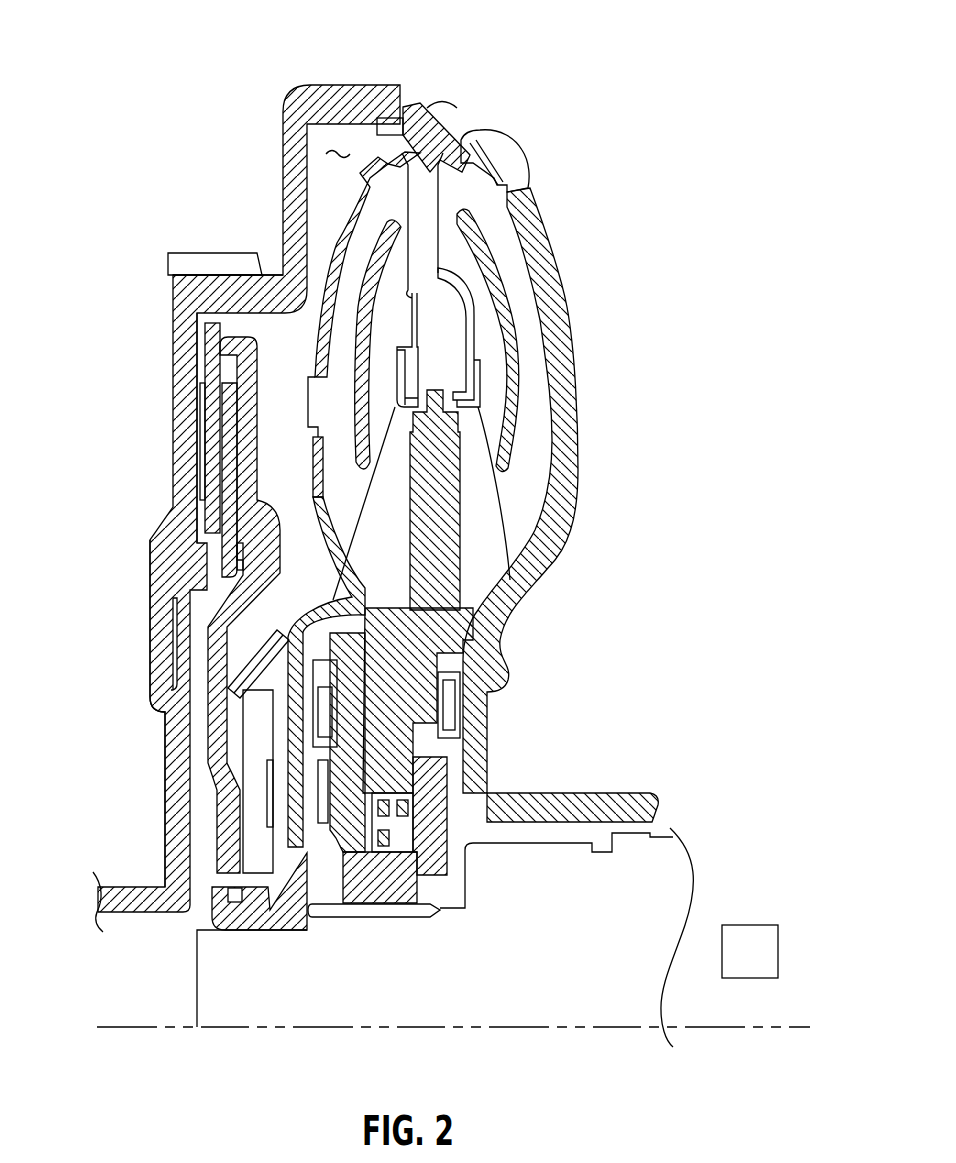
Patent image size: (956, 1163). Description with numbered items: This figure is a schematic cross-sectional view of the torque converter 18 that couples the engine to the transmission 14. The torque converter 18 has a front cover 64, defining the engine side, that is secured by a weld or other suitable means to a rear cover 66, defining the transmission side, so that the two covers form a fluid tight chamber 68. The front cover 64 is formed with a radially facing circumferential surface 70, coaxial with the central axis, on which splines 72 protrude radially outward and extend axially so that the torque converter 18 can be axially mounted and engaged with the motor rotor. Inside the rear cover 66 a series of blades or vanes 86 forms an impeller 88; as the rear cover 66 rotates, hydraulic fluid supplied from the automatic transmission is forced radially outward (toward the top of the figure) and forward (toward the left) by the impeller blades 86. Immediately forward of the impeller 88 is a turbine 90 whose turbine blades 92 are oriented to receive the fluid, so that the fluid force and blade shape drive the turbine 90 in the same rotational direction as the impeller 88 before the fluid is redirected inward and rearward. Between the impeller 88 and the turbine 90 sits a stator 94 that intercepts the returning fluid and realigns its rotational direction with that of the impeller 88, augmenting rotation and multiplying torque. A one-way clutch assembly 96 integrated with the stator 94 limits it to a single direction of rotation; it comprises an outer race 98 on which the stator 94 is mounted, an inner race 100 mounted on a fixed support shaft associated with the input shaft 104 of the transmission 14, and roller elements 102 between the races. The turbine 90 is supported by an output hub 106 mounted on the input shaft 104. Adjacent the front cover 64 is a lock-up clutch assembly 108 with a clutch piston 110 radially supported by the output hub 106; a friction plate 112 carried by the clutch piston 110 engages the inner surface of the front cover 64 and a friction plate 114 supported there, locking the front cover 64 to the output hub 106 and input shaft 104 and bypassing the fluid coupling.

The transmission 14 is at (673, 952).
The torque converter 18 is at (523, 60).
The front cover 64 is at (303, 107).
The rear cover 66 is at (500, 153).
The fluid tight chamber 68 is at (340, 150).
The circumferential surface 70 is at (278, 262).
The splines 72 is at (166, 252).
The impeller blades 86 is at (530, 302).
The impeller 88 is at (503, 236).
The turbine 90 is at (300, 338).
The turbine blades 92 is at (380, 203).
The stator 94 is at (447, 517).
The one-way clutch assembly 96 is at (448, 760).
The outer race 98 is at (400, 757).
The inner race 100 is at (440, 892).
The roller elements 102 is at (383, 820).
The input shaft 104 is at (592, 982).
The output hub 106 is at (273, 917).
The lock-up clutch assembly 108 is at (186, 516).
The clutch piston 110 is at (233, 602).
The friction plate 112 is at (213, 400).
The friction plate 114 is at (230, 463).